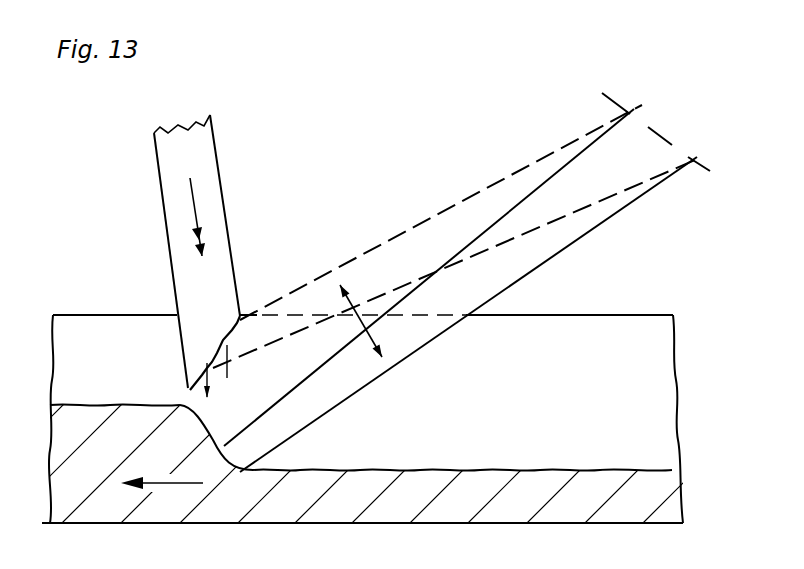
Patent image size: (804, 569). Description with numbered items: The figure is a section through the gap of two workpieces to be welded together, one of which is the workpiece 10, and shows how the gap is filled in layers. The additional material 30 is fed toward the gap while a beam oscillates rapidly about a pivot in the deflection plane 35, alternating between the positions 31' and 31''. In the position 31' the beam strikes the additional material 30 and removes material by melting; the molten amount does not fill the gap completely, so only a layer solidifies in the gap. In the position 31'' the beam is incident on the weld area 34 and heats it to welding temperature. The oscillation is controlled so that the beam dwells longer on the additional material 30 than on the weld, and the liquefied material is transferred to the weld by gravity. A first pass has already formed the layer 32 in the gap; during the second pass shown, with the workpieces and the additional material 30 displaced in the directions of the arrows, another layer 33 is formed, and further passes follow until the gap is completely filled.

The workpiece 10 is at (628, 328).
The additional material 30 is at (193, 142).
The beam position 31' is at (454, 236).
The beam position 31'' is at (460, 290).
The layer 32 is at (475, 488).
The layer 33 is at (97, 418).
The weld area 34 is at (224, 446).
The deflection plane 35 is at (657, 131).